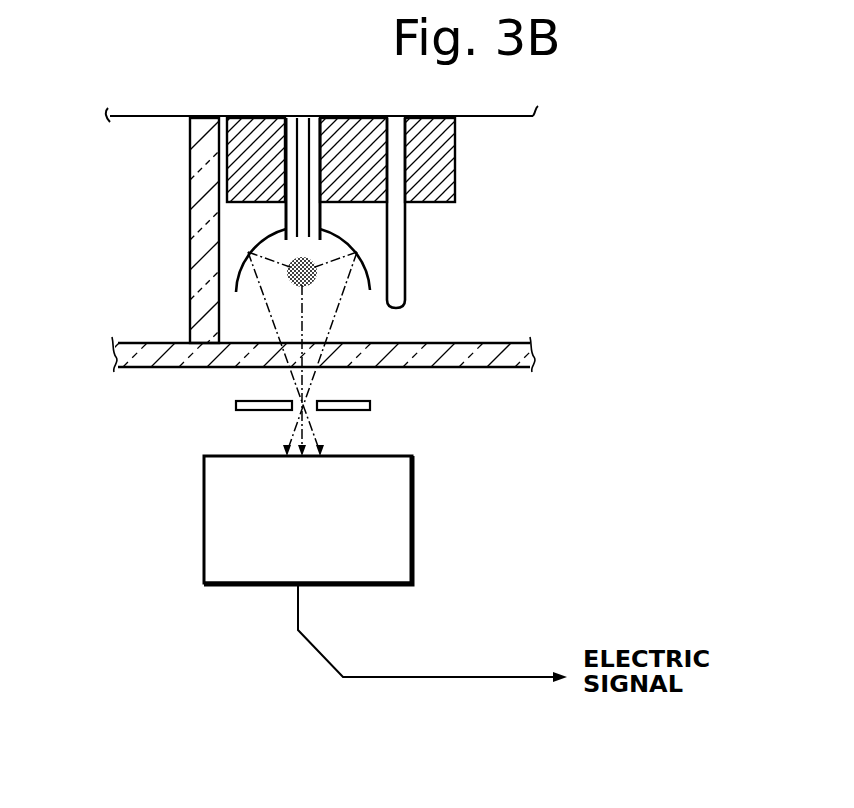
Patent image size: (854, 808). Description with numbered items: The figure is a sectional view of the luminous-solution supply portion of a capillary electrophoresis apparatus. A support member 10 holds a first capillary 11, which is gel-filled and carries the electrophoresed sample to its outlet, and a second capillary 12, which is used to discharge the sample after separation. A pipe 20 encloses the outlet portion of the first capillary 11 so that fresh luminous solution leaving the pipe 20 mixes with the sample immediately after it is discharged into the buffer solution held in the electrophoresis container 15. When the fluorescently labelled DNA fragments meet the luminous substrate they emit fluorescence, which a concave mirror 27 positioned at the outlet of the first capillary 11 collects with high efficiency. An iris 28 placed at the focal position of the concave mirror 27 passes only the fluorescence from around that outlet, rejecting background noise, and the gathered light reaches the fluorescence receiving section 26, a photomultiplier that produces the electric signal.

The support member 10 is at (457, 168).
The first capillary 11 is at (303, 116).
The second capillary 12 is at (405, 266).
The electrophoresis container 15 is at (502, 367).
The pipe 20 is at (285, 217).
The fluorescence receiving section 26 is at (413, 512).
The concave mirror 27 is at (235, 280).
The iris 28 is at (370, 404).